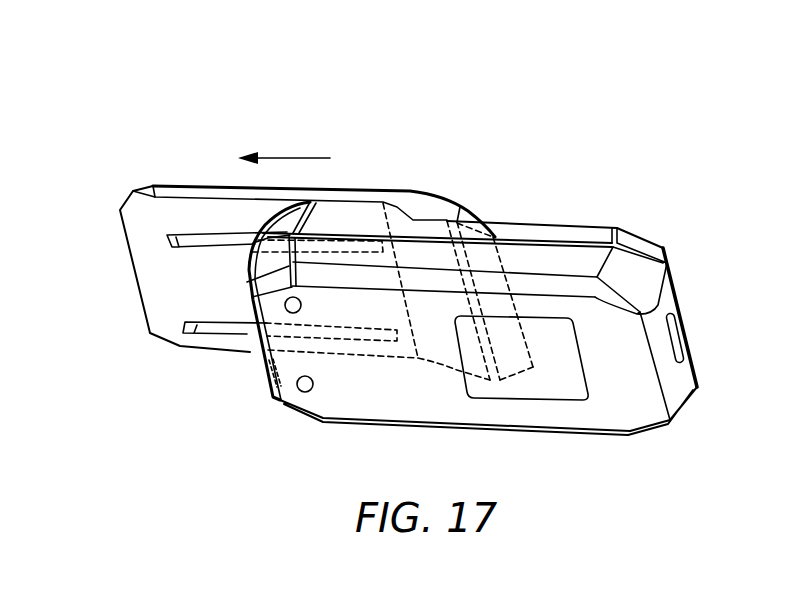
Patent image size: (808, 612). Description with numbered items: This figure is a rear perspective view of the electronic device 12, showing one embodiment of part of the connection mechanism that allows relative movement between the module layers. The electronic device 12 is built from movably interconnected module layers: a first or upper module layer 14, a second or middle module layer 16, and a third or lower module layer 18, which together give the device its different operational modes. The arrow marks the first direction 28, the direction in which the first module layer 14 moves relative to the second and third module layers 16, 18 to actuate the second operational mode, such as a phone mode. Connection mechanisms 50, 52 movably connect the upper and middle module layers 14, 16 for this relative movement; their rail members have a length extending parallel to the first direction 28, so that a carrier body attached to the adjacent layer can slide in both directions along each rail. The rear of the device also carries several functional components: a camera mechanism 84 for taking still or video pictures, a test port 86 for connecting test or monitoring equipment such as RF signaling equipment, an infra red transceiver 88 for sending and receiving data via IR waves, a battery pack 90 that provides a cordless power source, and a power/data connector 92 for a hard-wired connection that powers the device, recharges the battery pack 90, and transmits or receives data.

The electronic device 12 is at (211, 96).
The first module layer 14 is at (183, 189).
The second module layer 16 is at (663, 253).
The third module layer 18 is at (517, 419).
The first direction 28 is at (282, 158).
The connection mechanism 50 is at (173, 240).
The connection mechanism 52 is at (180, 348).
The camera mechanism 84 is at (286, 311).
The test port 86 is at (311, 388).
The infra red transceiver 88 is at (270, 382).
The battery pack 90 is at (570, 390).
The power/data connector 92 is at (677, 356).